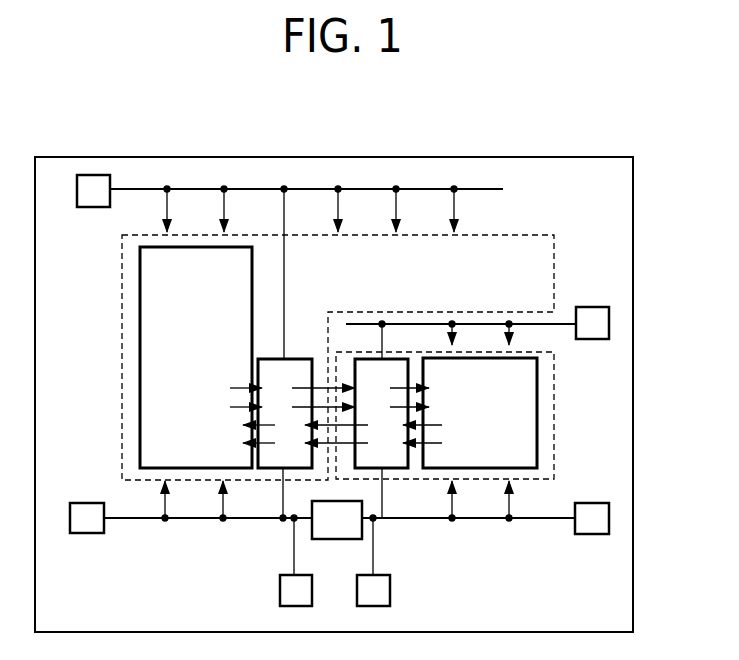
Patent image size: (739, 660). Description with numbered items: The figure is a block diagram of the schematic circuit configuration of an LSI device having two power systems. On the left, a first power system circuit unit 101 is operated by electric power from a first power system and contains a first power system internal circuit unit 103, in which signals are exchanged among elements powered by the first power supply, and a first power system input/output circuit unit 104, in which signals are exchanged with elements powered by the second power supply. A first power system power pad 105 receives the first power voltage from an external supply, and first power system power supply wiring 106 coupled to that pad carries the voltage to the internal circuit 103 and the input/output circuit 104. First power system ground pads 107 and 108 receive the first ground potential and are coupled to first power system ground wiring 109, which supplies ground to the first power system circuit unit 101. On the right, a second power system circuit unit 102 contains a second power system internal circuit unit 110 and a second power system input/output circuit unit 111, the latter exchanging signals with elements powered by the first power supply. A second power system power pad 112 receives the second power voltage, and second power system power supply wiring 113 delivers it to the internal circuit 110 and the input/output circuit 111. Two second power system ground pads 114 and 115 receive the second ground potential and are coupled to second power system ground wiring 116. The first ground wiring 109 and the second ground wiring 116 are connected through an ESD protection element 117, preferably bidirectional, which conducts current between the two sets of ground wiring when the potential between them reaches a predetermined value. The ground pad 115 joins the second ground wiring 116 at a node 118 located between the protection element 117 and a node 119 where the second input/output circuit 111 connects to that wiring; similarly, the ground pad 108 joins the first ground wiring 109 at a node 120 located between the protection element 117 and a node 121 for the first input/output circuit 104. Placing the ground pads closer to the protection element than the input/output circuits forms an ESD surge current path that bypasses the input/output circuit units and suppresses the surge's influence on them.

The first power system circuit unit 101 is at (122, 375).
The second power system circuit unit 102 is at (554, 392).
The first power system internal circuit unit 103 is at (139, 323).
The first power system input/output circuit unit 104 is at (300, 358).
The first power system power pad 105 is at (92, 175).
The first power system power supply wiring 106 is at (262, 189).
The first power system ground pad 107 is at (88, 502).
The first power system ground pad 108 is at (280, 588).
The first power system ground wiring 109 is at (177, 521).
The second power system internal circuit unit 110 is at (537, 435).
The second power system input/output circuit unit 111 is at (372, 358).
The second power system power pad 112 is at (609, 318).
The second power system power supply wiring 113 is at (497, 324).
The second power system ground pad 114 is at (609, 512).
The second power system ground pad 115 is at (391, 588).
The second power system ground wiring 116 is at (506, 521).
The ESD protection element 117 is at (335, 541).
The node 118 is at (376, 522).
The node 119 is at (378, 516).
The node 120 is at (283, 516).
The node 121 is at (283, 521).